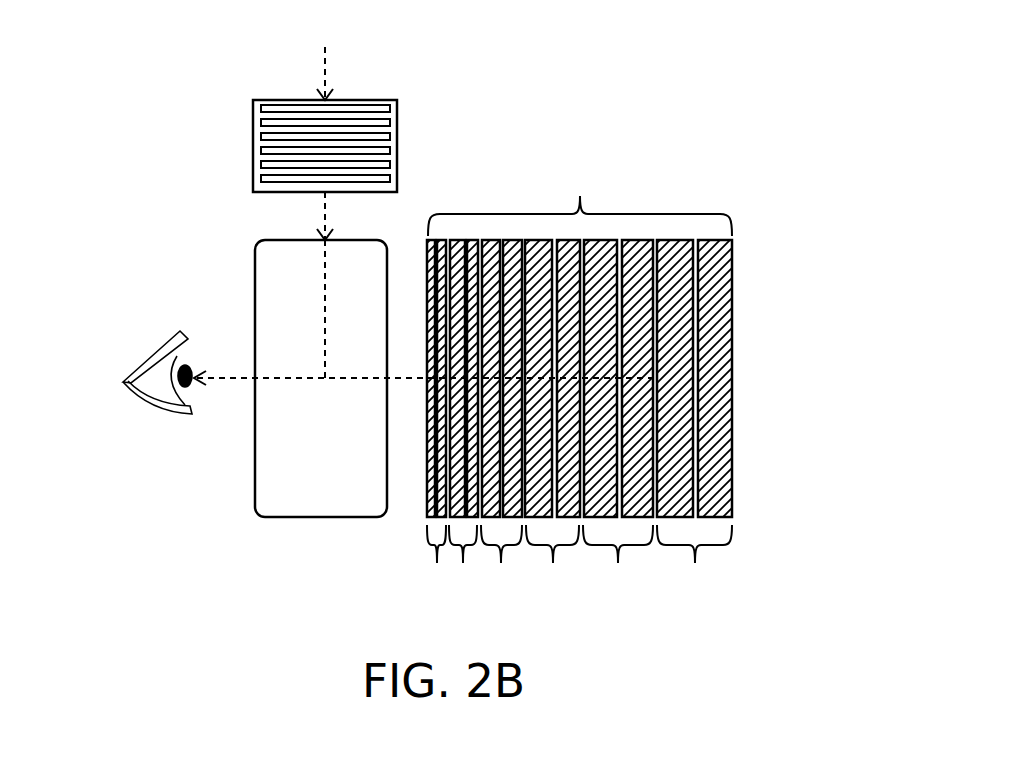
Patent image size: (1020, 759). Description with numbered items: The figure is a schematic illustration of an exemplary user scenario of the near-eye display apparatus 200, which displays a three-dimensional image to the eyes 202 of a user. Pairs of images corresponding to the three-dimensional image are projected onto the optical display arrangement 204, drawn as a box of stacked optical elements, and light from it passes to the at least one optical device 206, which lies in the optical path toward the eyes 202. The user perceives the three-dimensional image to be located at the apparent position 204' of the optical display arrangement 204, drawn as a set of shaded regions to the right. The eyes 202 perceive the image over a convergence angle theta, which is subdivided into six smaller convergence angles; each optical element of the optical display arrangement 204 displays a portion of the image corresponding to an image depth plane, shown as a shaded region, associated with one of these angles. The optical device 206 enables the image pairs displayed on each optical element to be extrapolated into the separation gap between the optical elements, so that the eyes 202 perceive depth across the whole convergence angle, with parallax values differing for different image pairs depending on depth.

The near-eye display apparatus 200 is at (740, 105).
The eyes of user 202 is at (107, 361).
The optical display arrangement 204 is at (250, 146).
The apparent position of the optical display arrangement 204' is at (637, 383).
The optical device 206 is at (248, 387).